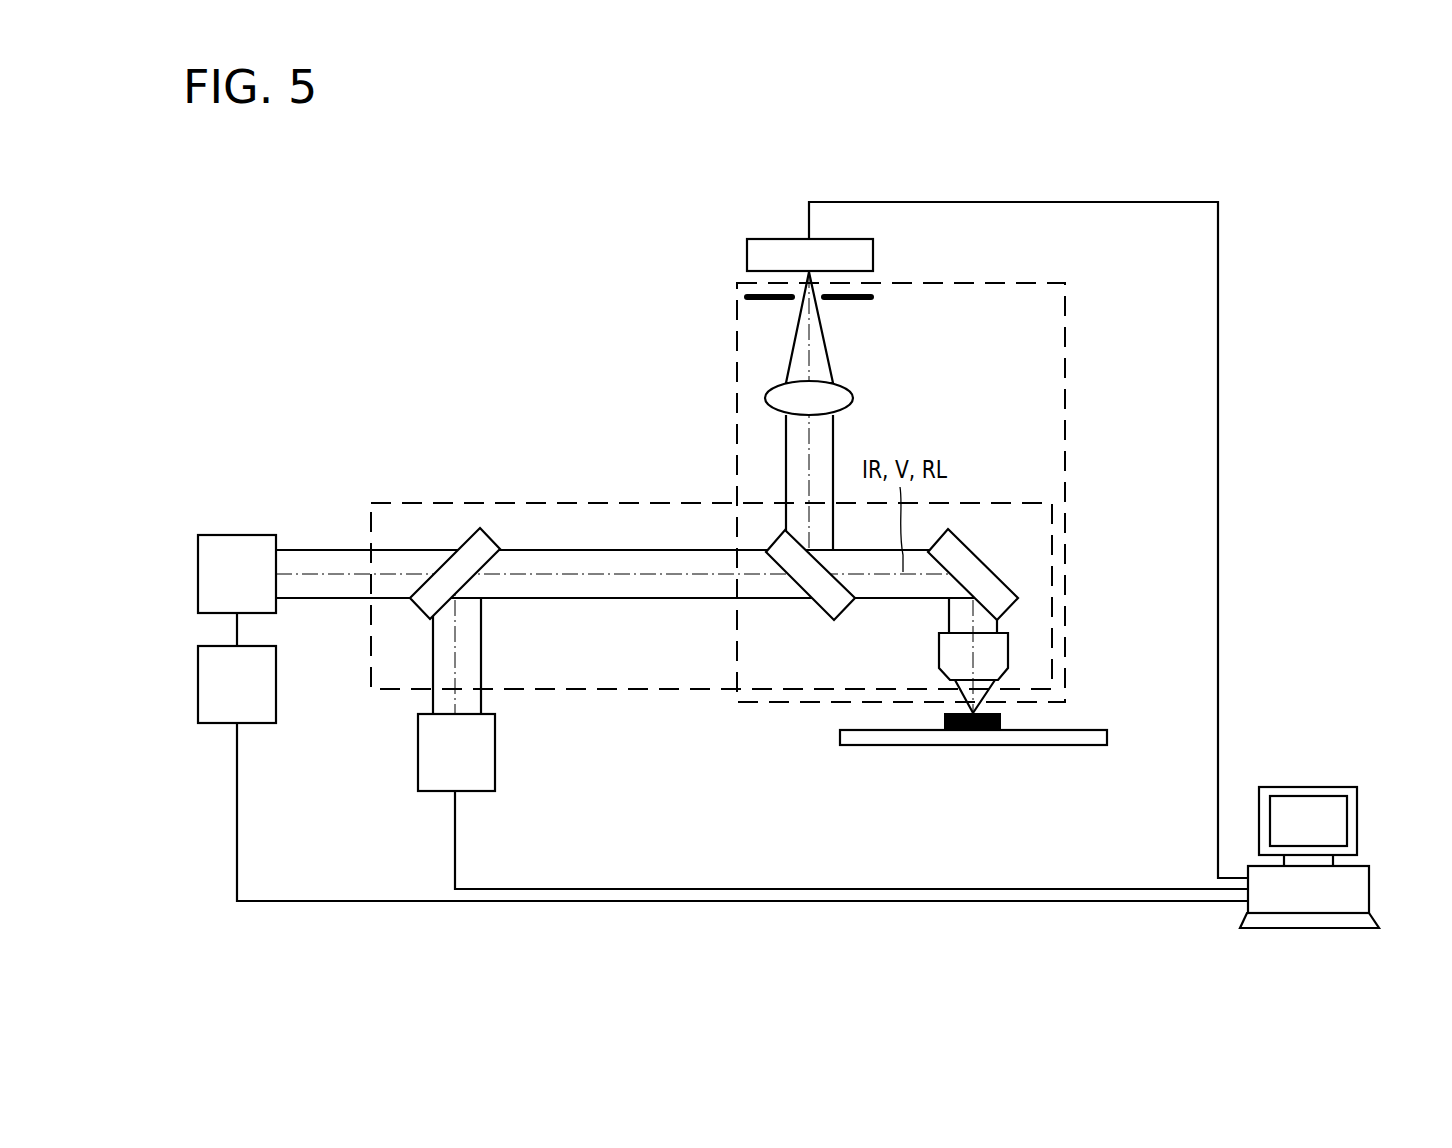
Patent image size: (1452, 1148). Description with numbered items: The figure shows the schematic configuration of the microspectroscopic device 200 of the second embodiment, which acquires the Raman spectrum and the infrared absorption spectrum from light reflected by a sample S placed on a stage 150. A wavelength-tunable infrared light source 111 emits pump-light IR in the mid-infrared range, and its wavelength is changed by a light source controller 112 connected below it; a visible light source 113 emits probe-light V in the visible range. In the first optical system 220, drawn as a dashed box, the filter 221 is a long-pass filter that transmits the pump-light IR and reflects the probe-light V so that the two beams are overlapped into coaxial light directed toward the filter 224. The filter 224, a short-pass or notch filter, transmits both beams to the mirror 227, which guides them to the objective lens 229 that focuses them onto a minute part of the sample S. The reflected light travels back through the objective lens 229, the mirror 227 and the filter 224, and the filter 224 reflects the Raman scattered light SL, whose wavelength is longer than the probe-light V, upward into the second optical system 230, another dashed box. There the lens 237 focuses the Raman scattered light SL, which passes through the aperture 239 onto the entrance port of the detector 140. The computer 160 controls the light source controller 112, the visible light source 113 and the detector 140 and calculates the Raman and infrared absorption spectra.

The wavelength-tunable infrared light source 111 is at (215, 535).
The light source controller 112 is at (213, 724).
The visible light source 113 is at (423, 794).
The detector 140 is at (875, 253).
The stage 150 is at (1107, 737).
The computer 160 is at (1337, 787).
The microspectroscopic device 200 is at (1342, 237).
The first optical system 220 is at (598, 500).
The filter 221 is at (466, 538).
The filter 224 is at (813, 612).
The mirror 227 is at (982, 557).
The objective lens 229 is at (1010, 645).
The second optical system 230 is at (737, 314).
The lens 237 is at (855, 393).
The aperture 239 is at (855, 300).
The sample S is at (1005, 722).
The pump-light IR is at (308, 572).
The probe-light V is at (455, 657).
The Raman scattered light SL is at (808, 349).